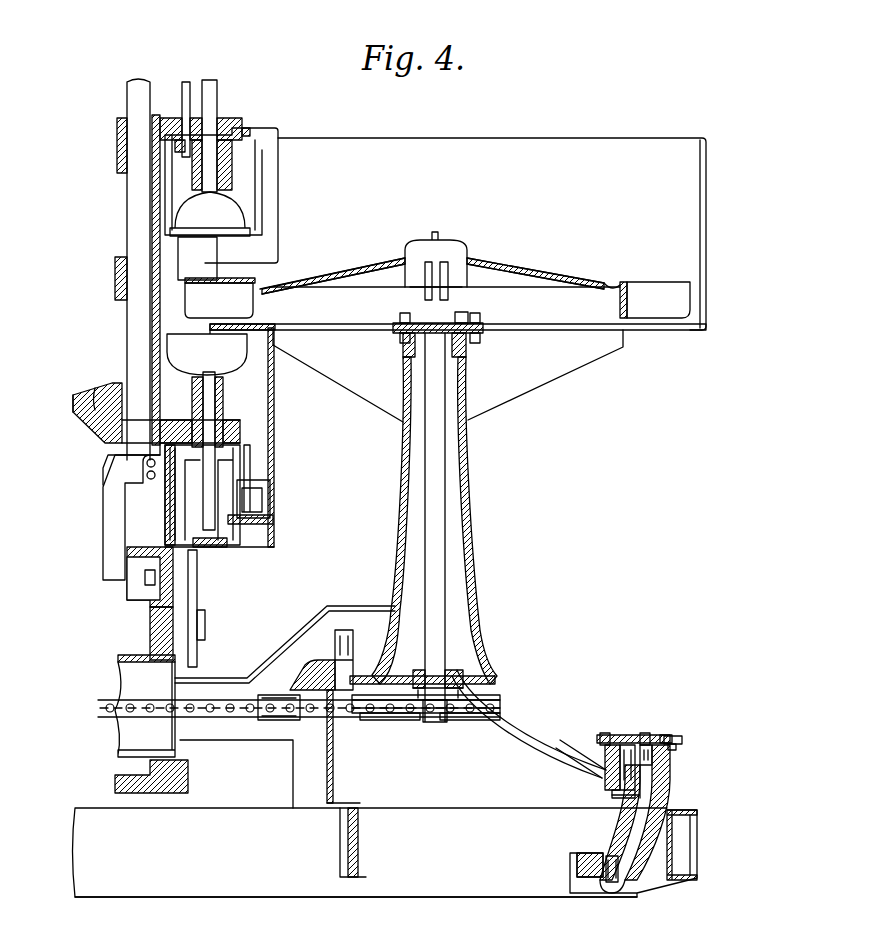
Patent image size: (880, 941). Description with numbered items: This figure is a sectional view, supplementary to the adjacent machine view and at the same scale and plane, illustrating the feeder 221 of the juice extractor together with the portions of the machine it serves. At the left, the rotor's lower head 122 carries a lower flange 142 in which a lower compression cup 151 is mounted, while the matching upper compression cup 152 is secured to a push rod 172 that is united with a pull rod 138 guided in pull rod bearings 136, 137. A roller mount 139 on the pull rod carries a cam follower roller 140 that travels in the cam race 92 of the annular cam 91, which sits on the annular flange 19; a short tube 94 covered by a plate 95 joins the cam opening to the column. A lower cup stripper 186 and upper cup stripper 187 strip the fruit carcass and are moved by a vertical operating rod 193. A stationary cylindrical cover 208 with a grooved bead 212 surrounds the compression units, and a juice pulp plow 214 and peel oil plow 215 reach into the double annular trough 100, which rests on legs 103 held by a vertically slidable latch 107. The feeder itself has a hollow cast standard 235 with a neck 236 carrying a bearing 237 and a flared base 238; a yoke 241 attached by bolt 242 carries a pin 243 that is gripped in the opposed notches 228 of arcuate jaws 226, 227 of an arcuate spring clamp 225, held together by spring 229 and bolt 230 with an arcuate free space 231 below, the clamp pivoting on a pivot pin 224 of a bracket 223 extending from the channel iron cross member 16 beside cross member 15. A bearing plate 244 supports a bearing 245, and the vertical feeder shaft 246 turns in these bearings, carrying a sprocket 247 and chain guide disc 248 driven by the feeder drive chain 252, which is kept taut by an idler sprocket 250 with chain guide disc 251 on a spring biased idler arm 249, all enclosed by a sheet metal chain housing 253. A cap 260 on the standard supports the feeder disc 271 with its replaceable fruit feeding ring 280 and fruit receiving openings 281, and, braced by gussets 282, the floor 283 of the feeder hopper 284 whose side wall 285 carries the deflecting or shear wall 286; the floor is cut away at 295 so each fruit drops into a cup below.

The channel iron cross member 15 is at (348, 845).
The channel iron cross member 16 is at (694, 844).
The annular flange 19 is at (190, 780).
The annular cam 91 is at (150, 618).
The cam race 92 is at (130, 558).
The short tube 94 is at (126, 655).
The plate 95 is at (172, 668).
The double annular trough 100 is at (222, 514).
The legs 103 is at (198, 600).
The vertically slidable latch 107 is at (205, 636).
The lower head 122 is at (108, 426).
The pull rod bearing 136 is at (118, 290).
The pull rod bearing 137 is at (112, 446).
The pull rod 138 is at (127, 97).
The roller mount 139 is at (112, 519).
The cam follower roller 140 is at (130, 590).
The lower flange 142 is at (228, 430).
The lower compression cup 151 is at (226, 402).
The upper compression cup 152 is at (236, 194).
The push rod 172 is at (217, 92).
The lower cup stripper 186 is at (218, 338).
The upper cup stripper 187 is at (234, 232).
The vertical operating rod 193 is at (186, 90).
The stationary cylindrical cover 208 is at (275, 432).
The grooved bead 212 is at (272, 484).
The juice pulp plow 214 is at (230, 532).
The peel oil plow 215 is at (272, 512).
The feeder 221 is at (694, 458).
The bracket 223 is at (648, 882).
The pivot pin 224 is at (612, 884).
The arcuate spring clamp 225 is at (678, 748).
The arcuate jaw 226 is at (636, 802).
The arcuate jaw 227 is at (662, 796).
The opposed notches 228 is at (672, 764).
The spring 229 is at (630, 736).
The bolt 230 is at (670, 738).
The arcuate free space 231 is at (655, 782).
The hollow cast standard 235 is at (468, 628).
The neck 236 is at (468, 346).
The bearing 237 is at (403, 346).
The flared base 238 is at (556, 745).
The yoke 241 is at (612, 752).
The bolt 242 is at (628, 782).
The pin 243 is at (648, 736).
The bearing plate 244 is at (470, 680).
The bearing 245 is at (452, 674).
The vertical feeder shaft 246 is at (443, 567).
The sprocket 247 is at (464, 720).
The chain guide disc 248 is at (498, 720).
The spring biased idler arm 249 is at (306, 666).
The idler sprocket 250 is at (266, 722).
The chain guide disc 251 is at (292, 722).
The feeder drive chain 252 is at (358, 716).
The sheet metal chain housing 253 is at (282, 645).
The cap 260 is at (470, 324).
The feeder disc 271 is at (518, 276).
The replaceable fruit feeding ring 280 is at (622, 282).
The fruit receiving openings 281 is at (236, 312).
The gussets 282 is at (520, 380).
The floor 283 is at (645, 334).
The feeder hopper 284 is at (549, 156).
The side wall 285 is at (707, 212).
The deflecting or shear wall 286 is at (278, 212).
The cut-away 295 is at (255, 324).